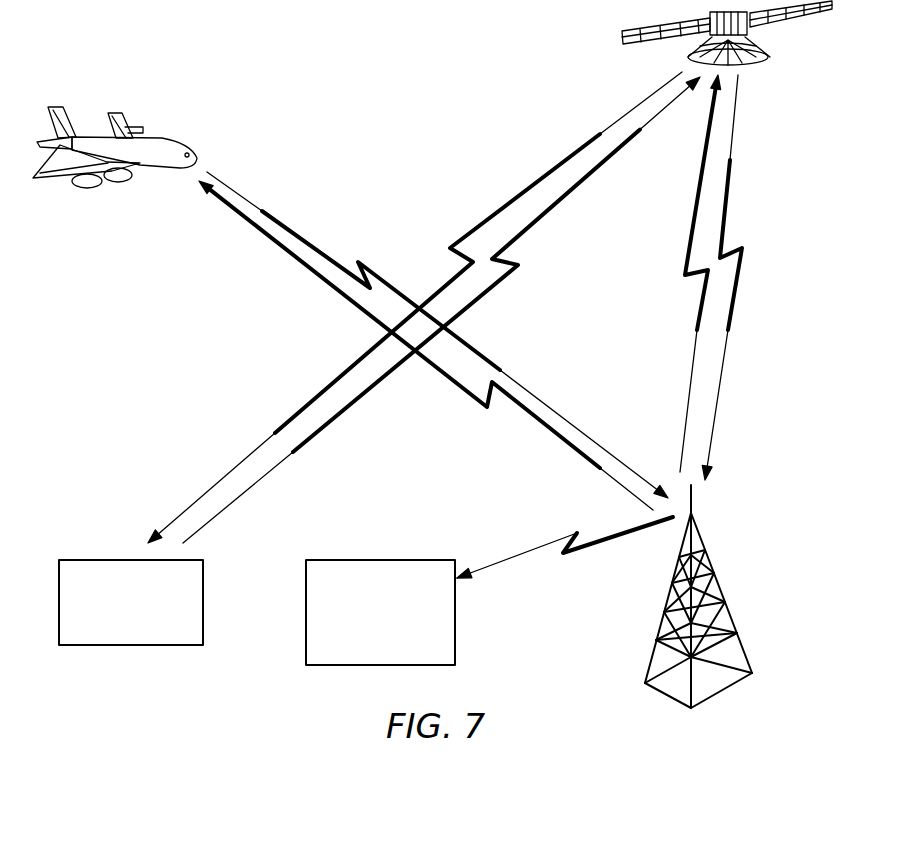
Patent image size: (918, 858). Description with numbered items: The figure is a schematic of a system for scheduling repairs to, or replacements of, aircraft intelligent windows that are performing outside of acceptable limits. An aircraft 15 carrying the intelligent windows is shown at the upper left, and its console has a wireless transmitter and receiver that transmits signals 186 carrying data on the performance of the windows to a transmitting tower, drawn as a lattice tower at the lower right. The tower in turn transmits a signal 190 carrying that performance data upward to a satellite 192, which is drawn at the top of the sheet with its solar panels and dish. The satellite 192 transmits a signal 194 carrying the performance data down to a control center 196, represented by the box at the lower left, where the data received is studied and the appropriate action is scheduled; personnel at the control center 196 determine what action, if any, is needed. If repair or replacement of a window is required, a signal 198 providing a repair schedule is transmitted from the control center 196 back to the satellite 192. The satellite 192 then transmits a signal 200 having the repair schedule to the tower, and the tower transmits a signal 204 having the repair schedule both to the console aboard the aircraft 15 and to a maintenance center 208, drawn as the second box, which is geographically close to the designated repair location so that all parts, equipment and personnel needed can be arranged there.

The aircraft 15 is at (163, 155).
The satellite 192 is at (747, 25).
The signals 186 is at (290, 231).
The signal 204 is at (302, 262).
The signal 194 is at (284, 425).
The signal 198 is at (300, 447).
The signal 190 is at (687, 220).
The signal 200 is at (742, 212).
The control center 196 is at (117, 560).
The maintenance center 208 is at (374, 560).